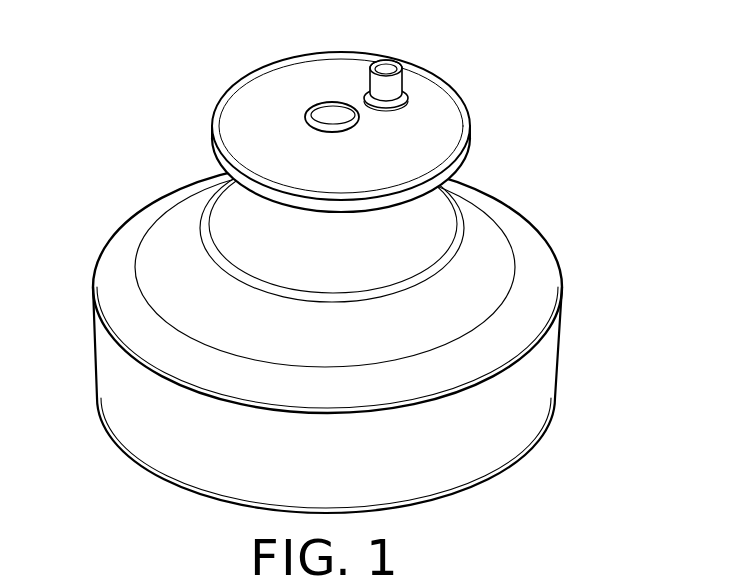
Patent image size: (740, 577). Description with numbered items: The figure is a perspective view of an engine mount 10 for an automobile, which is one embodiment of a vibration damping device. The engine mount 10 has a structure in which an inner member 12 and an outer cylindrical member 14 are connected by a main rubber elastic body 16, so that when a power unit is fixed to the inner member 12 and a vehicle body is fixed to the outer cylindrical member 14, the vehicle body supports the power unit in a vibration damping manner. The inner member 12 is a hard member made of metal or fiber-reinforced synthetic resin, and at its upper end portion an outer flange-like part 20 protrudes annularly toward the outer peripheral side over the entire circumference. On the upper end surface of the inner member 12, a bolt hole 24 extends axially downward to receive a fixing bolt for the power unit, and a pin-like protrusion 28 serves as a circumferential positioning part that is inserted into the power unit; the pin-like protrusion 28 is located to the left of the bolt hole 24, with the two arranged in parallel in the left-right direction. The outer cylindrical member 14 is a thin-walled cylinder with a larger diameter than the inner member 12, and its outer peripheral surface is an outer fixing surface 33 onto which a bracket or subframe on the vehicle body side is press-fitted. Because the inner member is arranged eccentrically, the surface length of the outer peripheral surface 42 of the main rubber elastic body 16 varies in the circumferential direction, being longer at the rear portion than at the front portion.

The engine mount 10 is at (328, 262).
The inner member 12 is at (333, 111).
The outer cylindrical member 14 is at (312, 333).
The main rubber elastic body 16 is at (140, 223).
The outer flange-like part 20 is at (440, 132).
The bolt hole 24 is at (328, 117).
The pin-like protrusion 28 is at (393, 87).
The outer fixing surface 33 is at (485, 443).
The outer peripheral surface 42 is at (477, 282).